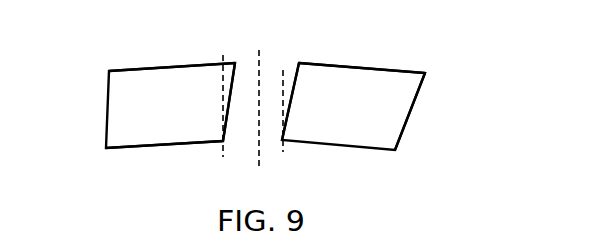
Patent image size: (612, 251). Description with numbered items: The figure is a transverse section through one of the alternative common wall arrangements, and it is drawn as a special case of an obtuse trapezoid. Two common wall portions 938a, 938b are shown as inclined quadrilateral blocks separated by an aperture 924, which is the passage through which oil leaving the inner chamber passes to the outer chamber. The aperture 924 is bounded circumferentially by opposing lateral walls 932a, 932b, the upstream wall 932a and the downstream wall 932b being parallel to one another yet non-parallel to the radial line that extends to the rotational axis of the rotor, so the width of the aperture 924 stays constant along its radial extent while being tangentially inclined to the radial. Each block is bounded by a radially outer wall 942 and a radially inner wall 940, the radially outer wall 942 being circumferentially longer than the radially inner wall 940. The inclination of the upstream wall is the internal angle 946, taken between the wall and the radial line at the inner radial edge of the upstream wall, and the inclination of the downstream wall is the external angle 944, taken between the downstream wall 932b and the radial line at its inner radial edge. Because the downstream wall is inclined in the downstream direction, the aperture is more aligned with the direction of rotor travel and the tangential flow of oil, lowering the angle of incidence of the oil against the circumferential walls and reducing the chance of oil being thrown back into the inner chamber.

The common wall 938a is at (195, 117).
The common wall 938b is at (377, 120).
The aperture 924 is at (250, 74).
The radially outer wall 942 is at (143, 68).
The radially inner wall 940 is at (129, 150).
The internal angle 946 is at (233, 94).
The external angle 944 is at (285, 93).
The downstream lateral wall 932b is at (299, 63).
The upstream lateral wall 932a is at (408, 122).